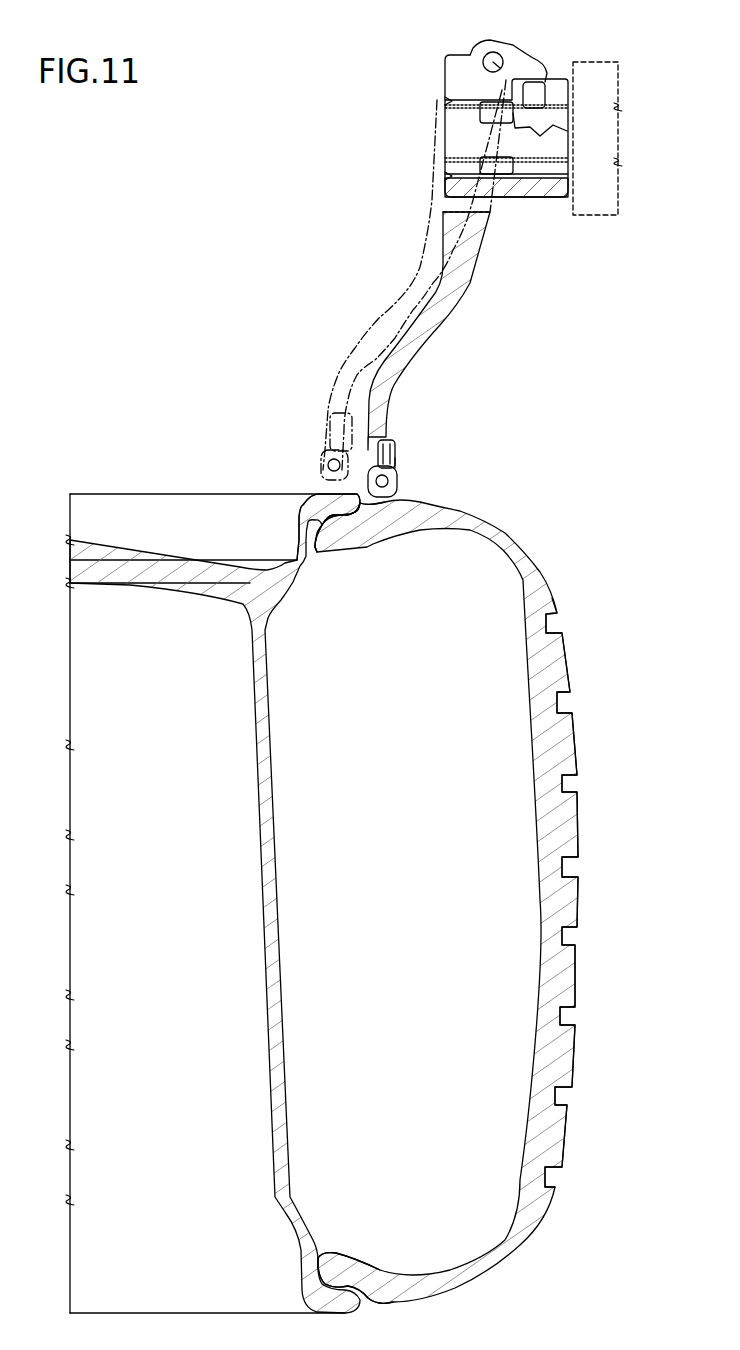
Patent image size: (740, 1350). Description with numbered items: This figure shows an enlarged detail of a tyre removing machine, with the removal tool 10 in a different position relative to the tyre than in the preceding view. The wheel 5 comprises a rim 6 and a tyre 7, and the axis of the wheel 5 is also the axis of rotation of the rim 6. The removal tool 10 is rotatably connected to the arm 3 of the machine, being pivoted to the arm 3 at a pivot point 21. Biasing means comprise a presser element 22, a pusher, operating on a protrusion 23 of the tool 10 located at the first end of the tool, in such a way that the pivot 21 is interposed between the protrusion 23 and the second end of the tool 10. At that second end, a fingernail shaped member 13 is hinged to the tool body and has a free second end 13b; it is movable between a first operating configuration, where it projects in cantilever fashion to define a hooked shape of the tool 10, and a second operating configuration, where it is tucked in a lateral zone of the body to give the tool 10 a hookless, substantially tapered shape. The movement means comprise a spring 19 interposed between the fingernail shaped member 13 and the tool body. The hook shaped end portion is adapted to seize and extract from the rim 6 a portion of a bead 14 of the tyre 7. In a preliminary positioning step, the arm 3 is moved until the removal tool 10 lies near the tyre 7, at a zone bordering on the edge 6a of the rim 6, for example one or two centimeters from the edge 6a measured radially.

The arm 3 is at (600, 72).
The wheel 5 is at (600, 742).
The rim 6 is at (96, 565).
The edge of the rim 6a is at (335, 497).
The tyre 7 is at (560, 828).
The removal tool 10 is at (410, 230).
The fingernail shaped member 13 is at (396, 449).
The free second end of the fingernail shaped member 13b is at (395, 440).
The bead 14 is at (332, 535).
The spring 19 is at (396, 462).
The pivot point 21 is at (445, 58).
The presser element 22 is at (531, 99).
The protrusion 23 is at (530, 62).